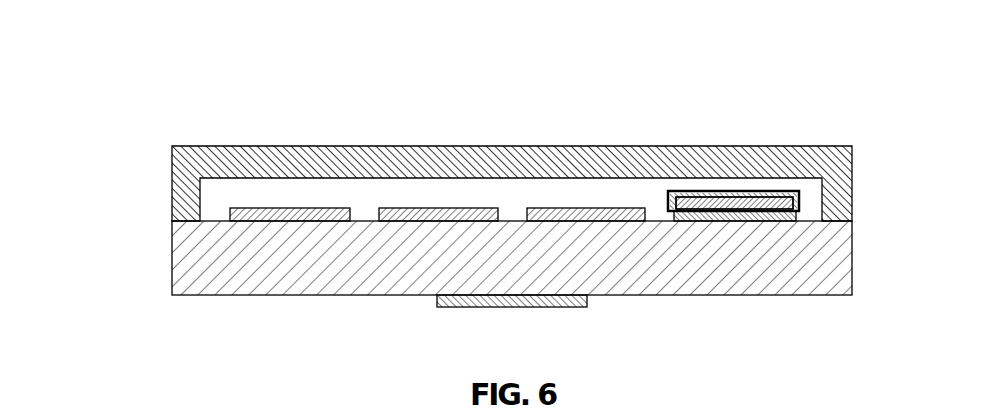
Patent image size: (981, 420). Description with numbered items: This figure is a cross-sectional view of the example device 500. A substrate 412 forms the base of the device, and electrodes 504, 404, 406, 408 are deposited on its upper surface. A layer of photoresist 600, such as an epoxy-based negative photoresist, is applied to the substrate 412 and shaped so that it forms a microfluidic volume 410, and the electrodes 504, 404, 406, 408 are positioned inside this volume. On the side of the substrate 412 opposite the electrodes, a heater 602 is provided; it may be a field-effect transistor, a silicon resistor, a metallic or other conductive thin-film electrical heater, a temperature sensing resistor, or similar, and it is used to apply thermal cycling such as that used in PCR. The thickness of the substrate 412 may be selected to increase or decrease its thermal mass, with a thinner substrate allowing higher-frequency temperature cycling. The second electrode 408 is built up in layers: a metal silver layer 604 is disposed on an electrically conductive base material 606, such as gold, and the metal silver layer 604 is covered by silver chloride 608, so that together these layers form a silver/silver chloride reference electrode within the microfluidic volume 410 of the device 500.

The device 500 is at (138, 91).
The substrate 412 is at (270, 278).
The layer of photoresist 600 is at (420, 147).
The microfluidic volume 410 is at (362, 201).
The electrode 504 is at (272, 208).
The electrode 404 is at (468, 208).
The electrode 406 is at (583, 208).
The second electrode 408 is at (693, 187).
The metal silver layer 604 is at (777, 211).
The electrically conductive base material 606 is at (716, 192).
The silver chloride 608 is at (746, 198).
The heater 602 is at (455, 307).